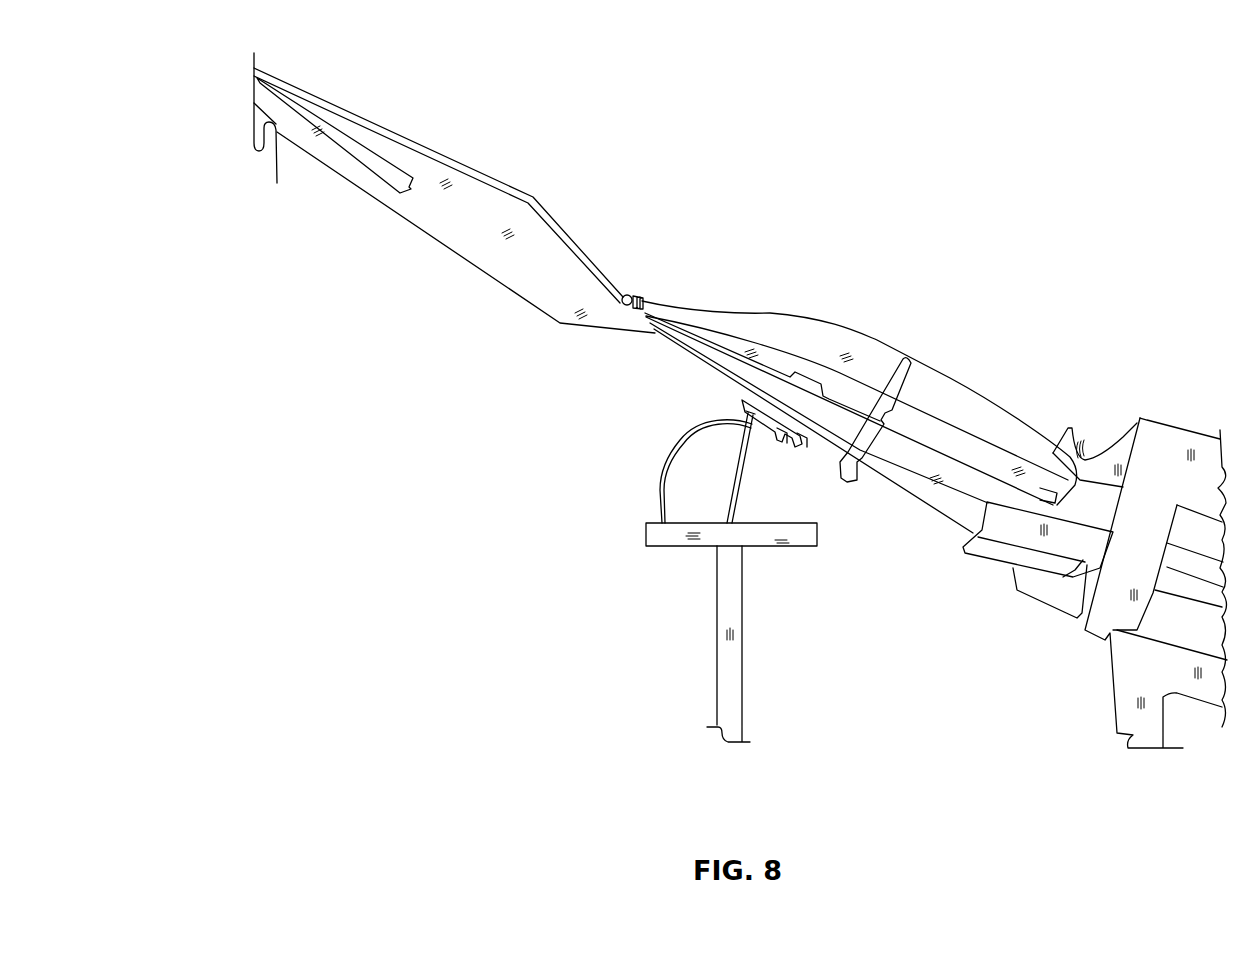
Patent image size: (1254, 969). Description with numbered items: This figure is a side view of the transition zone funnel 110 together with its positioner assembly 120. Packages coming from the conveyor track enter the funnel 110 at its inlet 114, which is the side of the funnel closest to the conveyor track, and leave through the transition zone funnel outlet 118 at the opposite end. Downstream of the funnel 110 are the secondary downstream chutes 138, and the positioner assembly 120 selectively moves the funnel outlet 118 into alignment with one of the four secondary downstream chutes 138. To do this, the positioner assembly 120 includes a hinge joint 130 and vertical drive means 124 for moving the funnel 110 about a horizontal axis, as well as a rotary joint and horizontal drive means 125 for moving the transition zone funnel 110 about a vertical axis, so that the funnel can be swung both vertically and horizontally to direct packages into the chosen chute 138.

The transition zone funnel 110 is at (770, 388).
The inlet 114 is at (641, 299).
The transition zone funnel outlet 118 is at (1045, 487).
The positioner assembly 120 is at (812, 422).
The vertical drive means 124 is at (737, 472).
The horizontal drive means 125 is at (748, 423).
The hinge joint 130 is at (630, 296).
The secondary downstream chutes 138 is at (1168, 567).